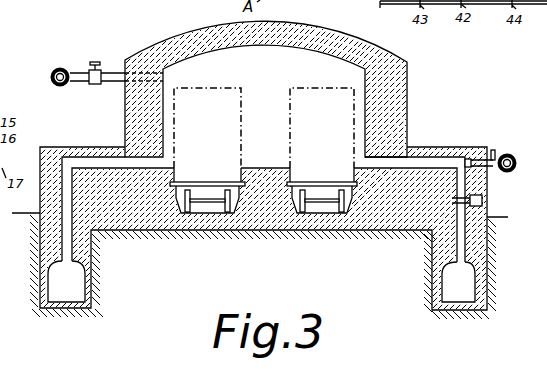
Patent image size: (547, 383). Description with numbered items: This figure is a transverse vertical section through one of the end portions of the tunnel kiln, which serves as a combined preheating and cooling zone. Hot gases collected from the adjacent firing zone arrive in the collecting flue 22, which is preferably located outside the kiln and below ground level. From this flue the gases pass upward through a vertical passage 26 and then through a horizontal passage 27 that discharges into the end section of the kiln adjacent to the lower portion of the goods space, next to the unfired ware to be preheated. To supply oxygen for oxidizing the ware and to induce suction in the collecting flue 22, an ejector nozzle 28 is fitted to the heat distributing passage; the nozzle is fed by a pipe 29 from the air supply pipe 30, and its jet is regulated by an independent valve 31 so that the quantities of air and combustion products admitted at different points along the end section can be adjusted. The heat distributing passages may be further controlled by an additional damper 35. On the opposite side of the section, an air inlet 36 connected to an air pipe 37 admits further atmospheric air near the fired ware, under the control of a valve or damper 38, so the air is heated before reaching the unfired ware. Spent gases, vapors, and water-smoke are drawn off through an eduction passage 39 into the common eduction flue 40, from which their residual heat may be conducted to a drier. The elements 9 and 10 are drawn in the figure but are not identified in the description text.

The grate plate 9 is at (205, 187).
The grate supports 10 is at (229, 196).
The collecting flue 22 is at (458, 282).
The vertical passage 26 is at (468, 232).
The horizontal passage 27 is at (431, 163).
The ejector nozzle 28 is at (468, 161).
The pipe 29 is at (485, 158).
The air supply pipe 30 is at (511, 171).
The valve 31 is at (495, 152).
The damper 35 is at (476, 191).
The air inlet 36 is at (116, 73).
The air pipe 37 is at (60, 67).
The controlling valve or damper 38 is at (96, 84).
The eduction passage 39 is at (107, 162).
The eduction flue 40 is at (66, 281).